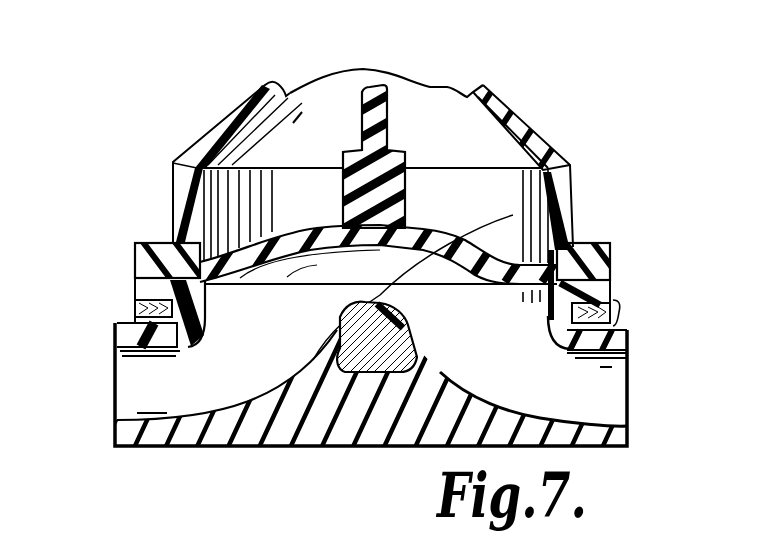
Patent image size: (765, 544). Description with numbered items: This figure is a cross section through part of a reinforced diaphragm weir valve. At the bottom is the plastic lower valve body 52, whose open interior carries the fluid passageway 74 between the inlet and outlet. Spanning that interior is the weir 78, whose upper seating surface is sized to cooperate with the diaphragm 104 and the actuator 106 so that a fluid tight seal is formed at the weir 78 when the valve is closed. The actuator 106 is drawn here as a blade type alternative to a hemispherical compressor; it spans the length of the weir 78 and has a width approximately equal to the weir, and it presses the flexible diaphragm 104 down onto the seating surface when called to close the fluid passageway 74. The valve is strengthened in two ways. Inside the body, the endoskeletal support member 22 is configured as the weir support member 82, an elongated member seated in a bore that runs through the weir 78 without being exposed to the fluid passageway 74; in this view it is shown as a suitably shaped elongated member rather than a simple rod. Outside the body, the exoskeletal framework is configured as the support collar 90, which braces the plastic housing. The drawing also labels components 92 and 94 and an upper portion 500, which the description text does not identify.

The endoskeletal support member 22 is at (440, 372).
The lower valve body 52 is at (627, 438).
The fluid passageway 74 is at (144, 387).
The weir 78 is at (513, 215).
The weir support member 82 is at (505, 250).
The support collar 90 is at (622, 312).
The seal ring 92 is at (132, 303).
The clamp ring 94 is at (132, 312).
The diaphragm 104 is at (610, 270).
The actuator 106 is at (405, 153).
The housing cap 500 is at (527, 121).